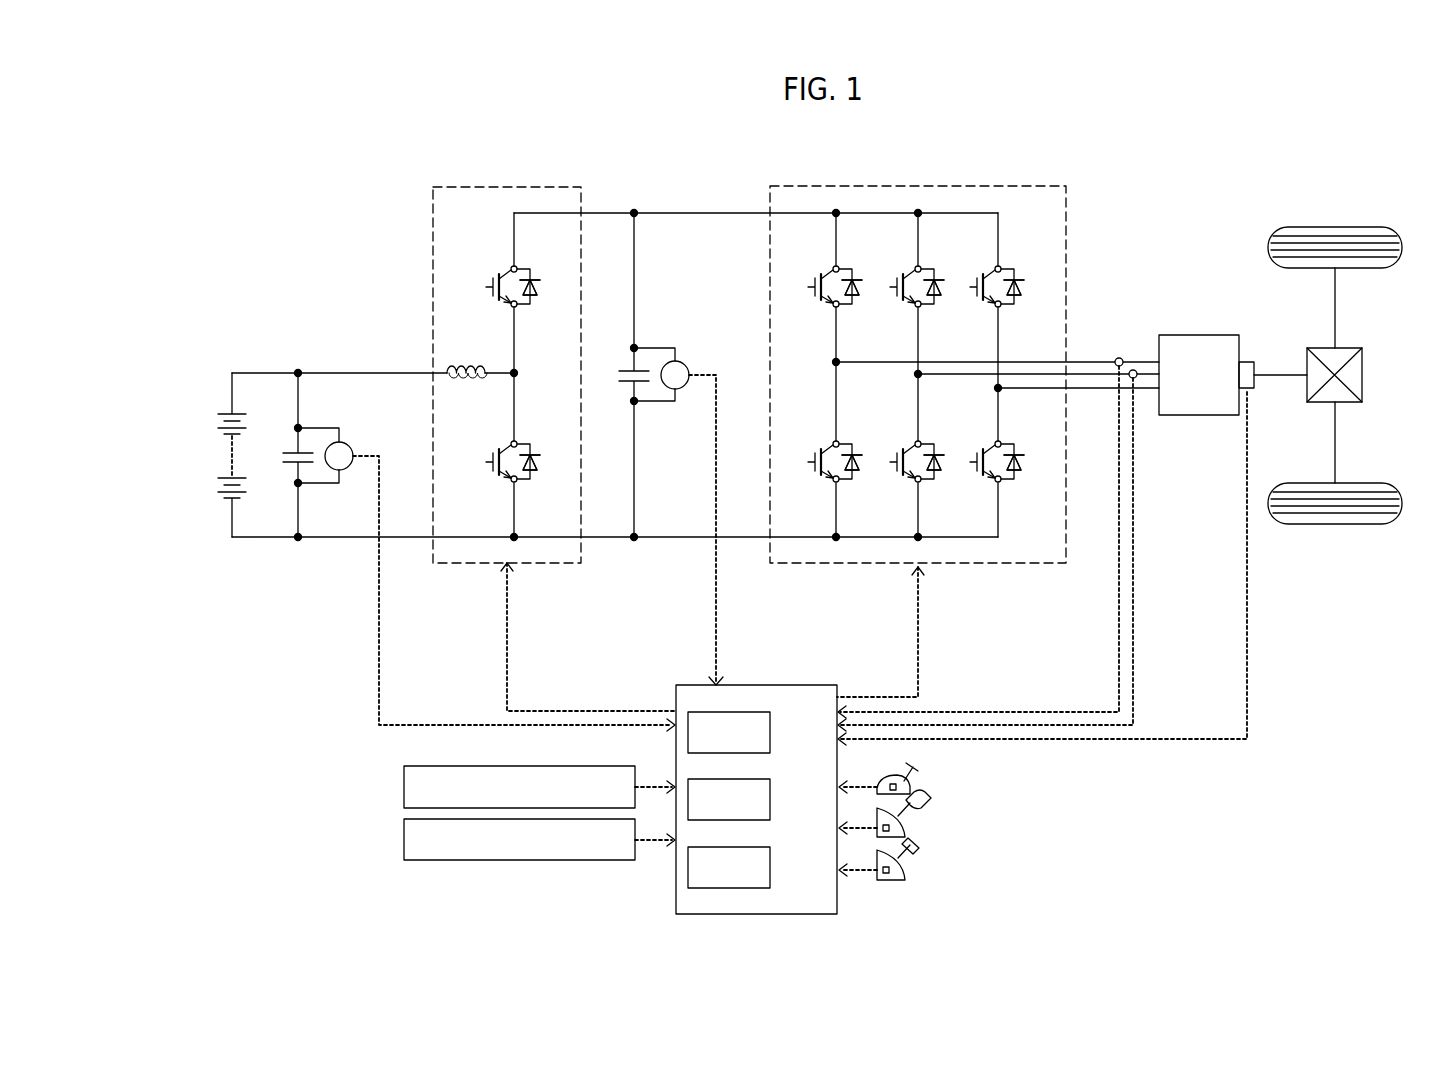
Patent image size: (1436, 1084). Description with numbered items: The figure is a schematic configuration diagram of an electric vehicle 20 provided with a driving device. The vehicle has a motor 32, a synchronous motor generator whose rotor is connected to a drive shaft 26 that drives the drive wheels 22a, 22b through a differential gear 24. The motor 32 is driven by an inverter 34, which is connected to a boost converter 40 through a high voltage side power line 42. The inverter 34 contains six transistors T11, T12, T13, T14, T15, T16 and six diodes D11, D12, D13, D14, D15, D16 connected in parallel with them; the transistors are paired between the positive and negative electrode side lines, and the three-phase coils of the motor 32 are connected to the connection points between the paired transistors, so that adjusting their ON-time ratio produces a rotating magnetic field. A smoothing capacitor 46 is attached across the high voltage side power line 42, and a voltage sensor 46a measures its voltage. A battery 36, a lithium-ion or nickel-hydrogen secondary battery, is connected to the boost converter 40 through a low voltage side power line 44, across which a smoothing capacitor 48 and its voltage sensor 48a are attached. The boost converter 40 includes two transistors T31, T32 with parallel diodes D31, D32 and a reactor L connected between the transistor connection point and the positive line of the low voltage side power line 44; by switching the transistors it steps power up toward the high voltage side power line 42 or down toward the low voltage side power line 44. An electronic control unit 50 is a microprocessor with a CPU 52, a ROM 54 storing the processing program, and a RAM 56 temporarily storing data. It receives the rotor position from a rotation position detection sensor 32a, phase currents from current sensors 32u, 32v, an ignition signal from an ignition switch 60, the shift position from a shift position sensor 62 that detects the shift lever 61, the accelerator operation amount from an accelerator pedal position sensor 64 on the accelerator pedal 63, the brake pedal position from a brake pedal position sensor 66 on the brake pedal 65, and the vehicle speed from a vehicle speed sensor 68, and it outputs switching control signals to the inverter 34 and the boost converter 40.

The electric vehicle 20 is at (1232, 152).
The drive wheel 22a is at (1335, 227).
The drive wheel 22b is at (1333, 525).
The differential gear 24 is at (1346, 348).
The drive shaft 26 is at (1279, 374).
The motor 32 is at (1200, 335).
The rotation position detection sensor 32a is at (1249, 360).
The current sensor 32u is at (1116, 356).
The current sensor 32v is at (1138, 369).
The inverter 34 is at (915, 186).
The battery 36 is at (226, 412).
The boost converter 40 is at (514, 187).
The high voltage side power line 42 is at (759, 213).
The low voltage side power line 44 is at (417, 373).
The smoothing capacitor 46 is at (625, 368).
The voltage sensor 46a is at (679, 360).
The smoothing capacitor 48 is at (294, 450).
The voltage sensor 48a is at (339, 441).
The electronic control unit 50 is at (757, 685).
The CPU 52 is at (770, 733).
The ROM 54 is at (770, 800).
The RAM 56 is at (770, 867).
The ignition switch 60 is at (404, 787).
The shift lever 61 is at (912, 769).
The shift position sensor 62 is at (910, 790).
The accelerator pedal 63 is at (922, 812).
The accelerator pedal position sensor 64 is at (905, 831).
The brake pedal 65 is at (918, 855).
The brake pedal position sensor 66 is at (905, 873).
The vehicle speed sensor 68 is at (404, 841).
The reactor L is at (472, 362).
The transistor T11 is at (814, 287).
The transistor T12 is at (896, 287).
The transistor T13 is at (976, 287).
The transistor T14 is at (814, 462).
The transistor T15 is at (896, 462).
The transistor T16 is at (976, 462).
The transistor T31 is at (492, 287).
The transistor T32 is at (492, 462).
The diode D11 is at (854, 298).
The diode D12 is at (936, 298).
The diode D13 is at (1016, 298).
The diode D14 is at (854, 473).
The diode D15 is at (936, 473).
The diode D16 is at (1016, 473).
The diode D31 is at (532, 298).
The diode D32 is at (532, 473).